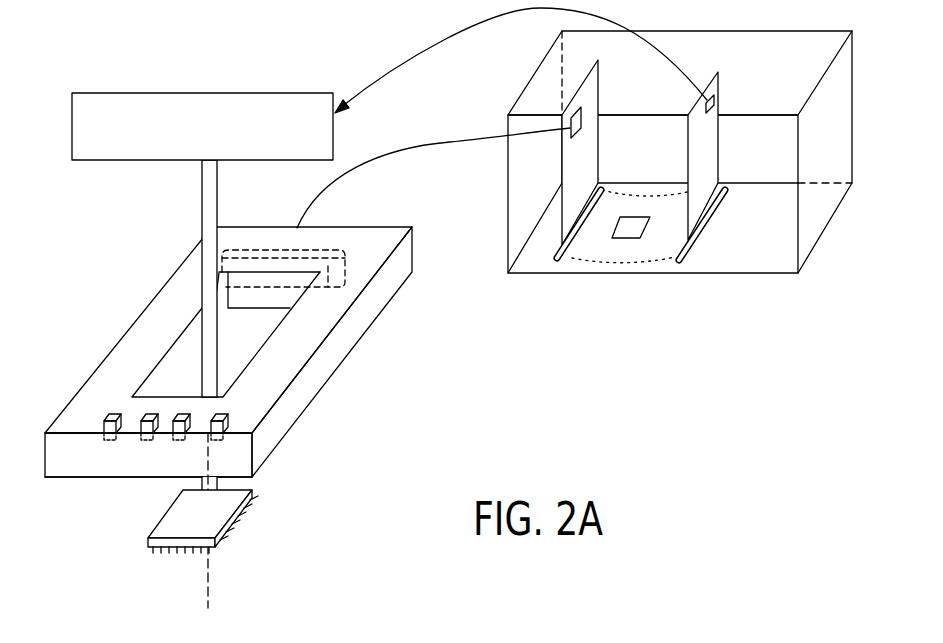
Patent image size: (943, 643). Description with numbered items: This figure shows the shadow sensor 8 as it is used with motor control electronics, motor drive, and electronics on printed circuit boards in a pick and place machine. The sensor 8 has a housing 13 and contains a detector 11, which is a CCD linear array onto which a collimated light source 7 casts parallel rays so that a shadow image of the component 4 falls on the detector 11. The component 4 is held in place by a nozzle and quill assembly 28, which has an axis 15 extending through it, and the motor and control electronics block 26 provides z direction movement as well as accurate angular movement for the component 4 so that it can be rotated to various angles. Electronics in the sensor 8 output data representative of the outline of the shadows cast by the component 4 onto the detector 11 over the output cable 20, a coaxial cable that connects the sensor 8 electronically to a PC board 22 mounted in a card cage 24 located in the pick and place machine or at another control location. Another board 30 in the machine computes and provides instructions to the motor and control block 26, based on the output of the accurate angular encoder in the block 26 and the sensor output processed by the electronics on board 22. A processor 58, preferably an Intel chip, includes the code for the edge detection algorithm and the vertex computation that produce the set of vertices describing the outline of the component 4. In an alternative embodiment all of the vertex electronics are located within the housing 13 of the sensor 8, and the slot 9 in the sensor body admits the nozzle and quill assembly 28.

The component 4 is at (182, 518).
The collimated light source 7 is at (179, 440).
The sensor 8 is at (382, 261).
The slot block 9 is at (252, 298).
The detector 11 is at (328, 268).
The housing 13 is at (57, 452).
The axis 15 is at (209, 558).
The output cable 20 is at (404, 148).
The PC board 22 is at (588, 181).
The card cage 24 is at (832, 133).
The motor and control electronics block 26 is at (108, 92).
The nozzle and quill assembly 28 is at (208, 203).
The board 30 is at (712, 162).
The processor 58 is at (623, 240).